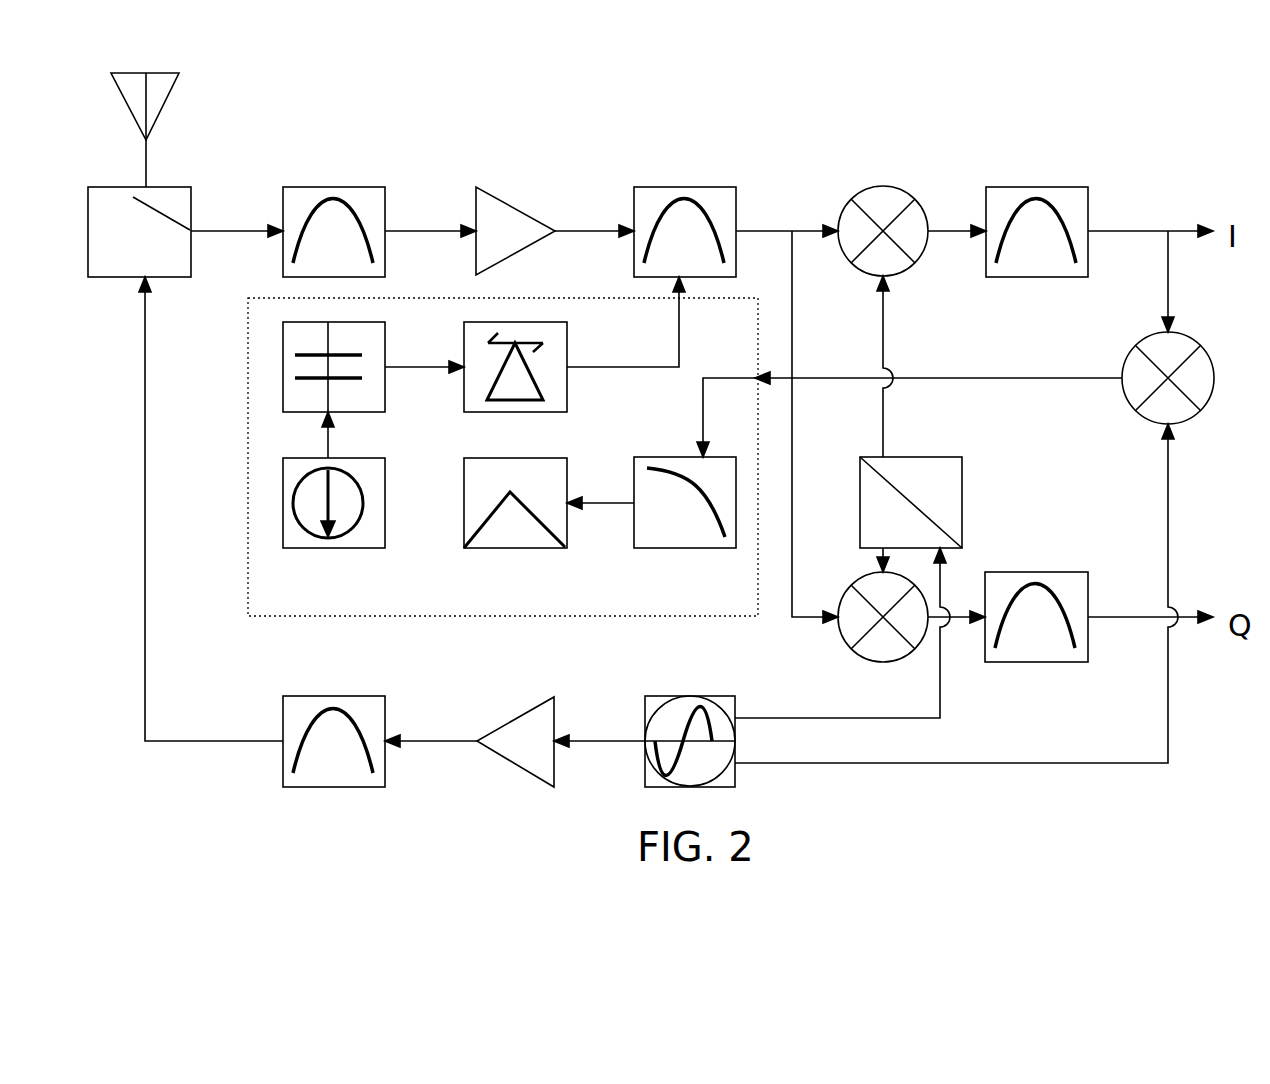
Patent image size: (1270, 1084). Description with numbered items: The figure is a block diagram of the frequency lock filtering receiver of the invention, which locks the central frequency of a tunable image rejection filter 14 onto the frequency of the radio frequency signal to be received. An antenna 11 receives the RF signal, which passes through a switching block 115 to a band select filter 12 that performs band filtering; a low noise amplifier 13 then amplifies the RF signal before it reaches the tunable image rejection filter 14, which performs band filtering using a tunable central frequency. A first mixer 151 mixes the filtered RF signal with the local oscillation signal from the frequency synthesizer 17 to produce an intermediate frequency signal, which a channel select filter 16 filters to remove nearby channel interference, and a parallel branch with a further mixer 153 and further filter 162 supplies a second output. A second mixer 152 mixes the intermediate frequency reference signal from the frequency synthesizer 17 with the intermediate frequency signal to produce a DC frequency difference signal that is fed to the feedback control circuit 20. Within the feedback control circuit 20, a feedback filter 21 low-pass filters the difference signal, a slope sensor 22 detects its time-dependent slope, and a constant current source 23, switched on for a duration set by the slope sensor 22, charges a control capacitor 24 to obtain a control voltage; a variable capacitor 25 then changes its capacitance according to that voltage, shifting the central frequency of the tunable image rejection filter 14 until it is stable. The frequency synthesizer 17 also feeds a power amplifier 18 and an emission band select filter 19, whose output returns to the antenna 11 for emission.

The antenna 11 is at (172, 95).
The switch 115 is at (168, 187).
The band select filter 12 is at (335, 187).
The low noise amplifier 13 is at (498, 195).
The tunable image rejection filter 14 is at (680, 185).
The first mixer 151 is at (873, 188).
The channel select filter 16 is at (1030, 185).
The second mixer 152 is at (1150, 425).
The mixer 153 is at (867, 663).
The low-pass filter 162 is at (1030, 572).
The frequency synthesizer 17 is at (690, 693).
The power amplifier 18 is at (532, 703).
The emission band select filter 19 is at (328, 693).
The feedback control circuit 20 is at (248, 455).
The feedback filter 21 is at (690, 553).
The slope sensor 22 is at (527, 548).
The constant current source 23 is at (345, 548).
The control capacitor 24 is at (385, 400).
The variable capacitor 25 is at (567, 400).